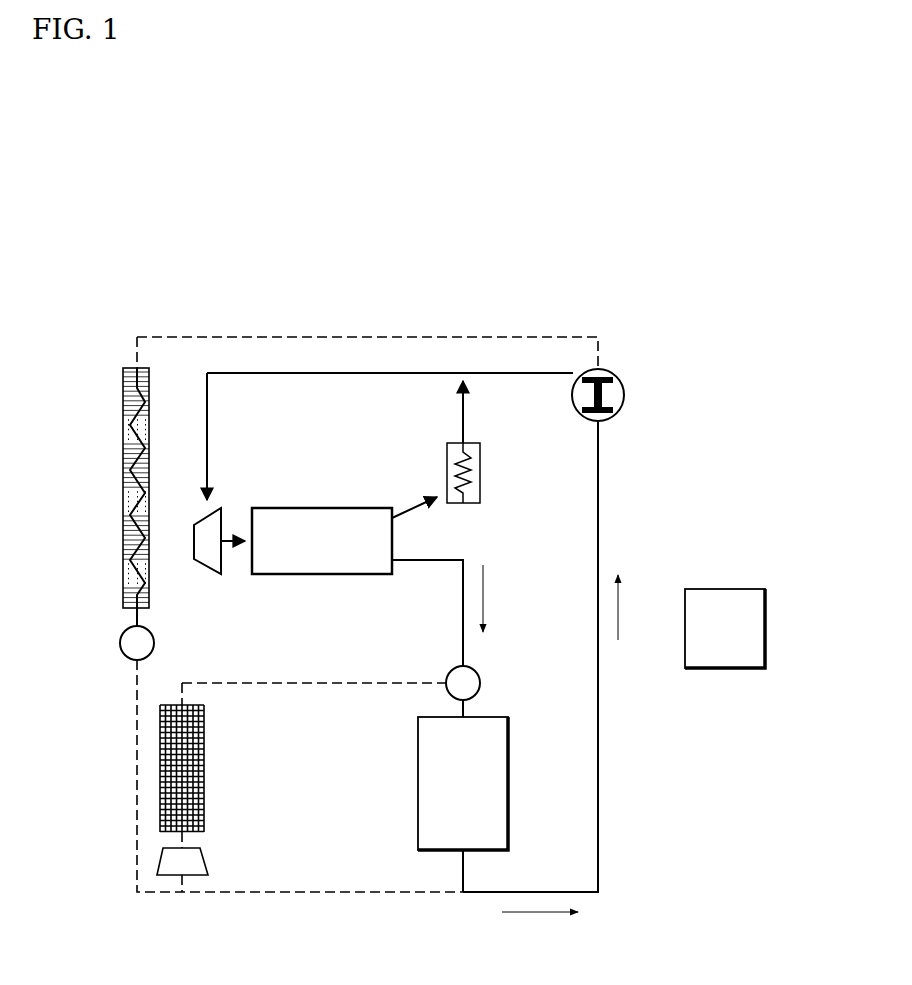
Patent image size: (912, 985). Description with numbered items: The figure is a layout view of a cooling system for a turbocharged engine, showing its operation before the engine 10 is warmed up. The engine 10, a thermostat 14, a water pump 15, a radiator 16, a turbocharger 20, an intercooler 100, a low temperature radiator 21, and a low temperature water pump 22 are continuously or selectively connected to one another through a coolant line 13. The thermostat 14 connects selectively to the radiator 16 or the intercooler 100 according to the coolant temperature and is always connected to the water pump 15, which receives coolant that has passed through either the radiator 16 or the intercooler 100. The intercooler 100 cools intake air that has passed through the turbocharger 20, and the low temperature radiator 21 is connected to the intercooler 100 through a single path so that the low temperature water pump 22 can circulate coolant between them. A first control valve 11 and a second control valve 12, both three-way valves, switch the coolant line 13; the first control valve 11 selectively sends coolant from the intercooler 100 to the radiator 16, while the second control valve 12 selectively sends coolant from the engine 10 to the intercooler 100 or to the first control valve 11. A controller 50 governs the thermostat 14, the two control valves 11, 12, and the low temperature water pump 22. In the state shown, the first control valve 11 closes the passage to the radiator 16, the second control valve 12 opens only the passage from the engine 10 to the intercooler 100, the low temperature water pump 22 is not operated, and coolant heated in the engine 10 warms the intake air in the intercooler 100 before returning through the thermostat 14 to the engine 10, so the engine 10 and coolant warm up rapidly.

The engine 10 is at (385, 540).
The first control valve 11 is at (120, 643).
The second control valve 12 is at (470, 683).
The coolant line 13 is at (518, 370).
The thermostat 14 is at (615, 388).
The water pump 15 is at (200, 546).
The radiator 16 is at (130, 423).
The turbocharger 20 is at (480, 465).
The low temperature radiator 21 is at (165, 764).
The low temperature water pump 22 is at (160, 852).
The controller 50 is at (725, 668).
The intercooler 100 is at (500, 800).